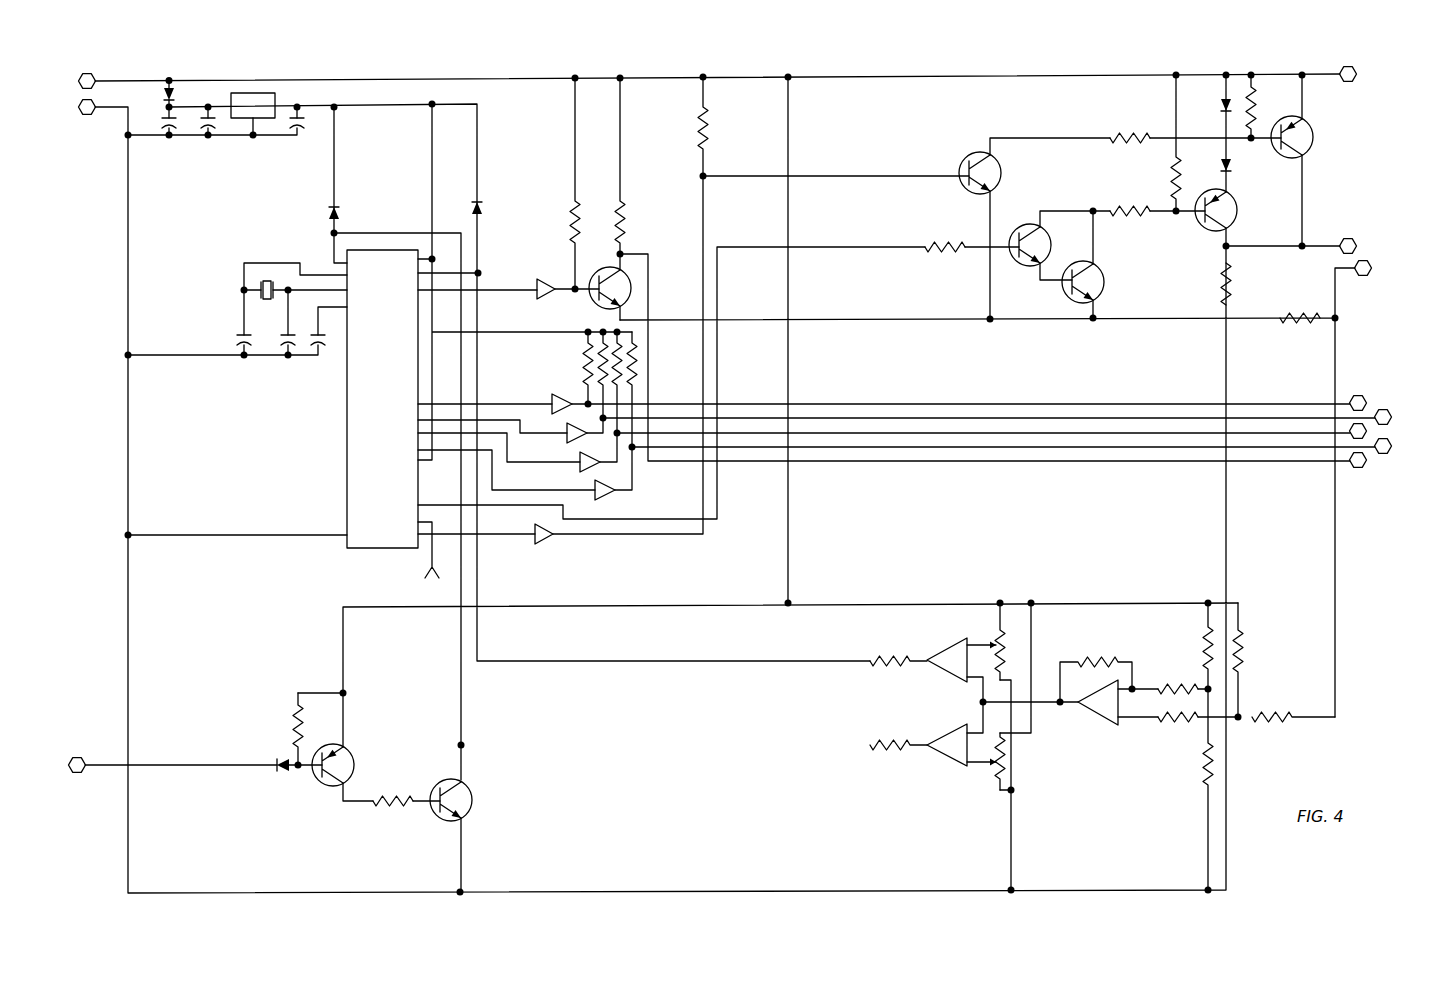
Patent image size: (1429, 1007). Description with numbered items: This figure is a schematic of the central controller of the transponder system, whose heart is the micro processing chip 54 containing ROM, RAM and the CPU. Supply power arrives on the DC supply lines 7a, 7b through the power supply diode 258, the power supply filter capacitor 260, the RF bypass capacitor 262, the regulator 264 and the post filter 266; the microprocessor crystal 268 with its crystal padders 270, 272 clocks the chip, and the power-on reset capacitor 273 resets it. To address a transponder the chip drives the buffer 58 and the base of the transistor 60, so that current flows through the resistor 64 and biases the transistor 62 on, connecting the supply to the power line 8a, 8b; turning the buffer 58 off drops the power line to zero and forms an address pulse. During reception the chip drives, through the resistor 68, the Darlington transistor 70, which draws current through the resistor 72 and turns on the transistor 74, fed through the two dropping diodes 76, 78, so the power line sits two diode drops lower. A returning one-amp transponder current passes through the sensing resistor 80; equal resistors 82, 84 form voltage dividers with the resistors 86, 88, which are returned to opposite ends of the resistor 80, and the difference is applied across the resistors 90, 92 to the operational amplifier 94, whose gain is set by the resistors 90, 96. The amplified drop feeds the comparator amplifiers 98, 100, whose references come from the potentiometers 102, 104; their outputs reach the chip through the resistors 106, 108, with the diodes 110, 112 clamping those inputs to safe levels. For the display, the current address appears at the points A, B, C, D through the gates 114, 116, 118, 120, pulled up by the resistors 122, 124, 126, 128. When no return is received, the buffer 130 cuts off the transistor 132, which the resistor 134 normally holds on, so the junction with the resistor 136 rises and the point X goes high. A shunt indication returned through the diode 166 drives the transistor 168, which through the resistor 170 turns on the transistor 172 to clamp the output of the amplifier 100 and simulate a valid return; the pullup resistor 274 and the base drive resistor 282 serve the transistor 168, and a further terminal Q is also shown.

The D.C. supply line 7a is at (87, 73).
The D.C. supply line 7b is at (83, 112).
The power line 8a is at (1352, 236).
The power line 8b is at (1370, 277).
The point A is at (1363, 394).
The point B is at (1387, 409).
The point C is at (1367, 431).
The point D is at (1388, 450).
The point X is at (1359, 468).
The terminal Q is at (78, 756).
The micro processing chip 54 is at (362, 457).
The buffer 58 is at (545, 536).
The transistor 60 is at (977, 152).
The transistor 62 is at (1314, 136).
The resistor 64 is at (1133, 130).
The resistor 68 is at (947, 239).
The transistor 70 is at (1062, 297).
The resistor 72 is at (1133, 203).
The transistor 74 is at (1240, 210).
The dropping diode 76 is at (1221, 100).
The dropping diode 78 is at (1238, 166).
The sensing resistor 80 is at (1300, 329).
The resistor 82 is at (1248, 650).
The resistor 84 is at (1204, 633).
The resistor 86 is at (1273, 710).
The resistor 88 is at (1198, 762).
The resistor 90 is at (1178, 683).
The resistor 92 is at (1175, 732).
The operational amplifier 94 is at (1098, 706).
The resistor 96 is at (1098, 655).
The comparator amplifier 98 is at (955, 652).
The comparator amplifier 100 is at (947, 738).
The potentiometer 102 is at (1008, 633).
The potentiometer 104 is at (988, 770).
The resistor 106 is at (893, 653).
The resistor 108 is at (880, 755).
The diode 110 is at (494, 207).
The diode 112 is at (347, 212).
The gate 114 is at (605, 490).
The gate 116 is at (578, 467).
The gate 118 is at (565, 437).
The gate 120 is at (550, 400).
The resistor 122 is at (580, 360).
The resistor 124 is at (608, 340).
The resistor 126 is at (625, 340).
The resistor 128 is at (637, 380).
The buffer 130 is at (530, 282).
The transistor 132 is at (627, 287).
The resistor 134 is at (567, 218).
The resistor 136 is at (633, 220).
The diode 166 is at (273, 755).
The transistor 168 is at (354, 762).
The resistor 170 is at (390, 808).
The transistor 172 is at (473, 808).
The power supply diode 258 is at (182, 92).
The power supply filter capacitor 260 is at (187, 124).
The capacitor 262 is at (226, 128).
The regulator 264 is at (260, 98).
The post filter 266 is at (310, 119).
The micro processor crystal 268 is at (267, 275).
The crystal padder 270 is at (231, 337).
The crystal padder 272 is at (274, 342).
The power on reset capacitor 273 is at (328, 343).
The pullup resistor 274 is at (292, 717).
The resistor 282 is at (717, 128).